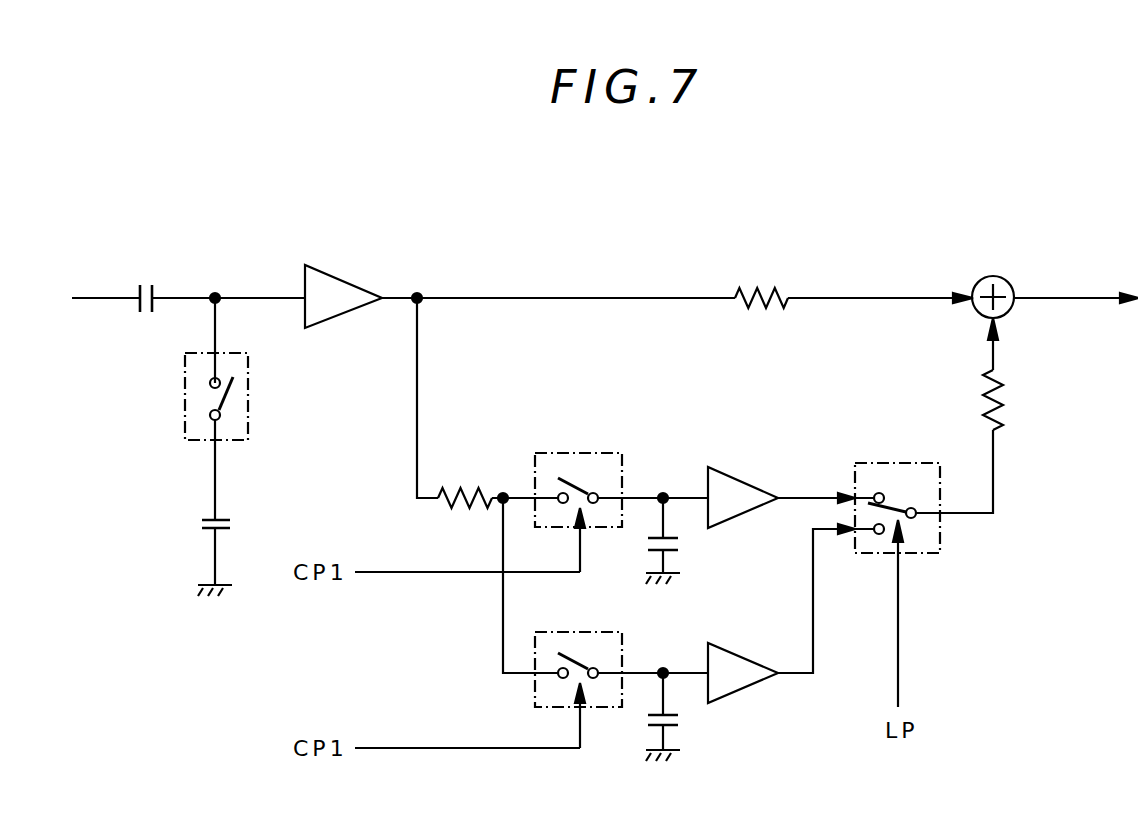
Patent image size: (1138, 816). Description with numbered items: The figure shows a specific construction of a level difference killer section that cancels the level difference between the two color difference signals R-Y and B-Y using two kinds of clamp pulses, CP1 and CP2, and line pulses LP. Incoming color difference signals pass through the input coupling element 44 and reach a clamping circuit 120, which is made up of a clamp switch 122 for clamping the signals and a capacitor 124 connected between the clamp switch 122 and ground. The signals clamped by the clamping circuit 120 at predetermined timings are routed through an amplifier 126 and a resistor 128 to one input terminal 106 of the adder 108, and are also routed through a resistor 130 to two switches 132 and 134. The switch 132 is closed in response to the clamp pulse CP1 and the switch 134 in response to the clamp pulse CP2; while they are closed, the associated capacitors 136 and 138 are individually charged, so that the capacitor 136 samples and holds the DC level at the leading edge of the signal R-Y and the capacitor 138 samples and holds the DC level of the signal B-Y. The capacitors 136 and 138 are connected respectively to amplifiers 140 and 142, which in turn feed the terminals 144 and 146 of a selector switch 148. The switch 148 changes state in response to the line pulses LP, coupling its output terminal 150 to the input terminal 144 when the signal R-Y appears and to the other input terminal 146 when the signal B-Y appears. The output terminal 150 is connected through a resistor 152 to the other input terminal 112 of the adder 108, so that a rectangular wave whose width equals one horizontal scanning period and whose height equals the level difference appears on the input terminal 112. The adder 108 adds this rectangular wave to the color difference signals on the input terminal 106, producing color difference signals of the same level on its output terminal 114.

The input coupling capacitor 44 is at (110, 297).
The input terminal 106 is at (863, 292).
The adder 108 is at (999, 276).
The input terminal 112 is at (990, 355).
The output terminal 114 is at (1050, 300).
The clamping circuit 120 is at (188, 485).
The clamp switch 122 is at (249, 428).
The capacitor 124 is at (232, 524).
The amplifier 126 is at (347, 282).
The resistor 128 is at (764, 284).
The resistor 130 is at (468, 481).
The switch 132 is at (558, 452).
The switch 134 is at (550, 630).
The capacitor 136 is at (683, 547).
The capacitor 138 is at (682, 720).
The amplifier 140 is at (762, 487).
The amplifier 142 is at (750, 688).
The input terminal 144 is at (813, 492).
The input terminal 146 is at (811, 605).
The switch 148 is at (942, 532).
The output terminal 150 is at (993, 472).
The resistor 152 is at (1004, 403).